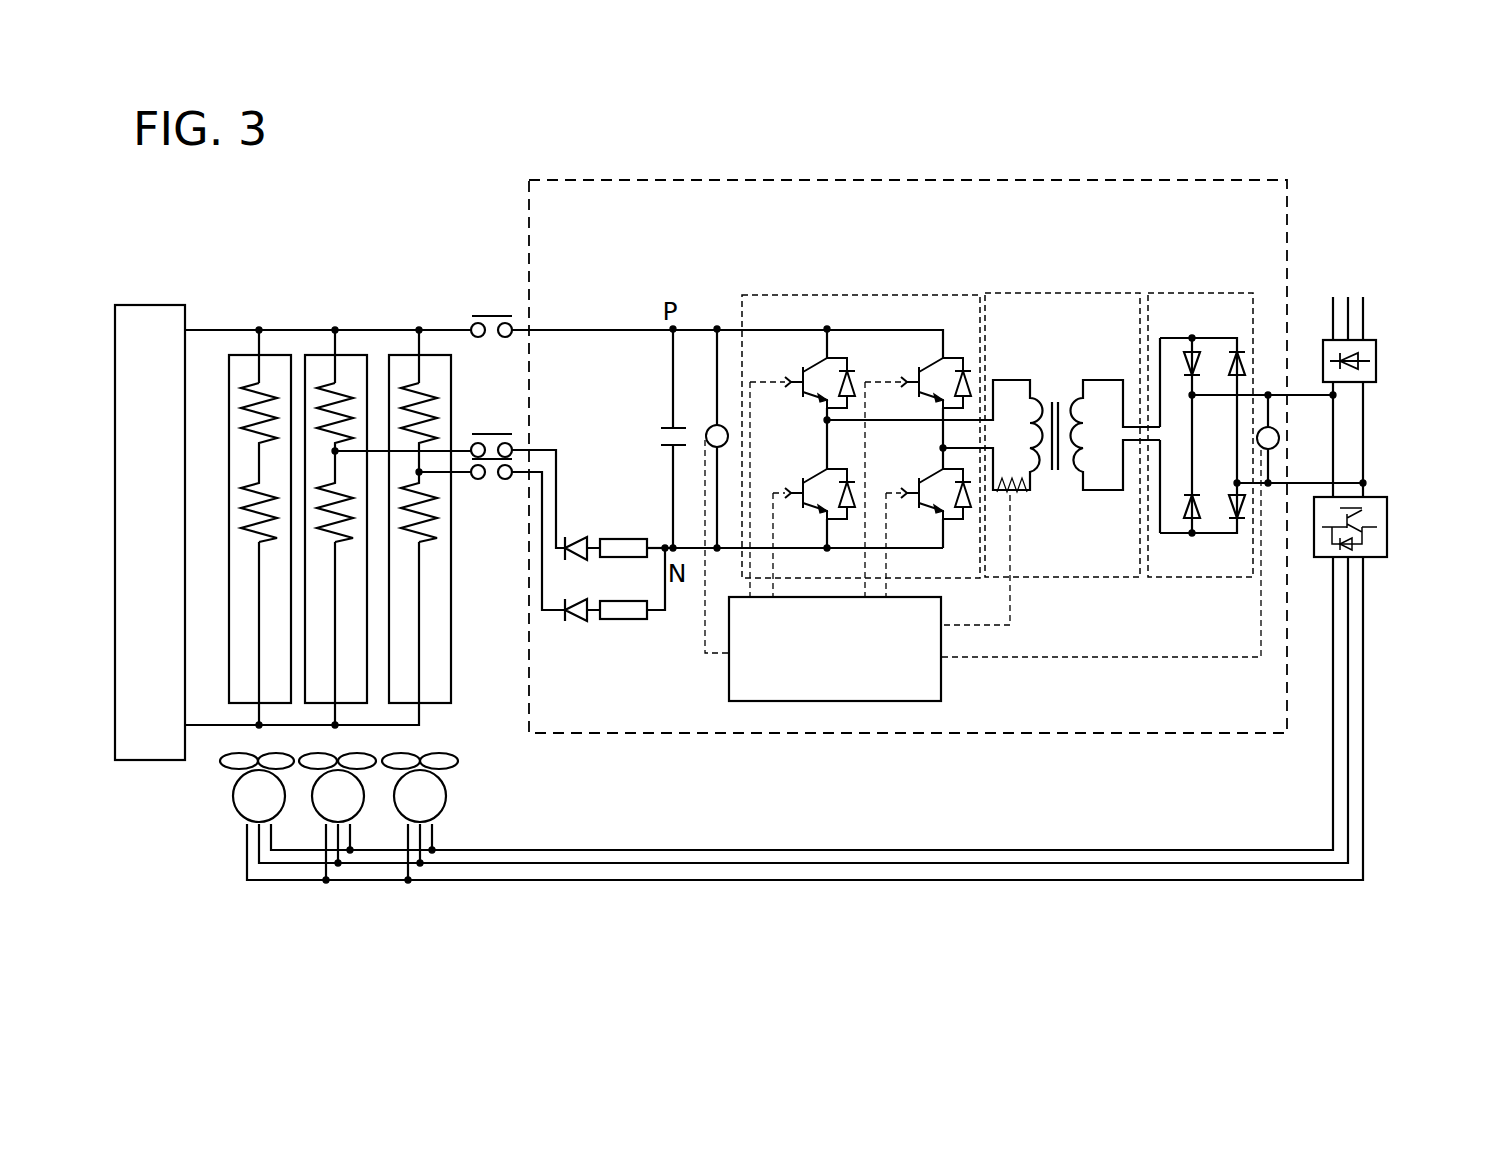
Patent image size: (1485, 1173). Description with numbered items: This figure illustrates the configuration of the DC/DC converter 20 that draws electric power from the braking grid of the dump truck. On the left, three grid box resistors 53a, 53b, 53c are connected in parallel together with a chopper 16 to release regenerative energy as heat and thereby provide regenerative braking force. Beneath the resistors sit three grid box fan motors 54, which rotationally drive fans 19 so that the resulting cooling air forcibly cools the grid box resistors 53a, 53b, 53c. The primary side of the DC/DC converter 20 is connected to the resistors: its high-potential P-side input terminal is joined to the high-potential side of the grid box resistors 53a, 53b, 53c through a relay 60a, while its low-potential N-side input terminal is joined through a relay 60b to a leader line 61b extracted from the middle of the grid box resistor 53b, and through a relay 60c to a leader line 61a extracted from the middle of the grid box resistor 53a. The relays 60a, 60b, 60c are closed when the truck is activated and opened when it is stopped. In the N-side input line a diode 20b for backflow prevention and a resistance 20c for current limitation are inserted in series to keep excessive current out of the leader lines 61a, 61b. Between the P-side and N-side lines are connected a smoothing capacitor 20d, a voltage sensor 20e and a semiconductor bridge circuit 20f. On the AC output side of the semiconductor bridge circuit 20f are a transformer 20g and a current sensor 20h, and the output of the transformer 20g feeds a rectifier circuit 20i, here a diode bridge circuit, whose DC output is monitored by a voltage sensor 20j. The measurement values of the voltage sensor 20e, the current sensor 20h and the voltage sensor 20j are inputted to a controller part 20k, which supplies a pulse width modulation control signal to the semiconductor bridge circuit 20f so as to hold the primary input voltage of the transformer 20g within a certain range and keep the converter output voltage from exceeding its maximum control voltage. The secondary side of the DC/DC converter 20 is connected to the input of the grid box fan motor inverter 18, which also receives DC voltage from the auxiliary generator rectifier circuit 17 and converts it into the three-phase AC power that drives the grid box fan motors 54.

The chopper 16 is at (145, 762).
The auxiliary generator rectifier circuit 17 is at (1383, 357).
The grid box fan motor inverter 18 is at (1390, 527).
The fan 19 is at (221, 763).
The DC/DC converter 20 is at (722, 740).
The diode 20b is at (582, 537).
The resistance 20c is at (630, 538).
The smoothing capacitor 20d is at (667, 427).
The voltage sensor 20e is at (710, 427).
The semiconductor bridge circuit 20f is at (840, 293).
The transformer 20g is at (1050, 293).
The current sensor 20h is at (1017, 508).
The rectifier circuit 20i is at (1190, 293).
The voltage sensor 20j is at (1270, 424).
The controller part 20k is at (863, 702).
The grid box resistor 53a is at (412, 352).
The grid box resistor 53b is at (332, 352).
The grid box resistor 53c is at (252, 352).
The grid box fan motor 54 is at (240, 817).
The relay 60a is at (487, 316).
The relay 60b is at (488, 434).
The relay 60c is at (507, 480).
The leader line 61a is at (443, 474).
The leader line 61b is at (353, 452).